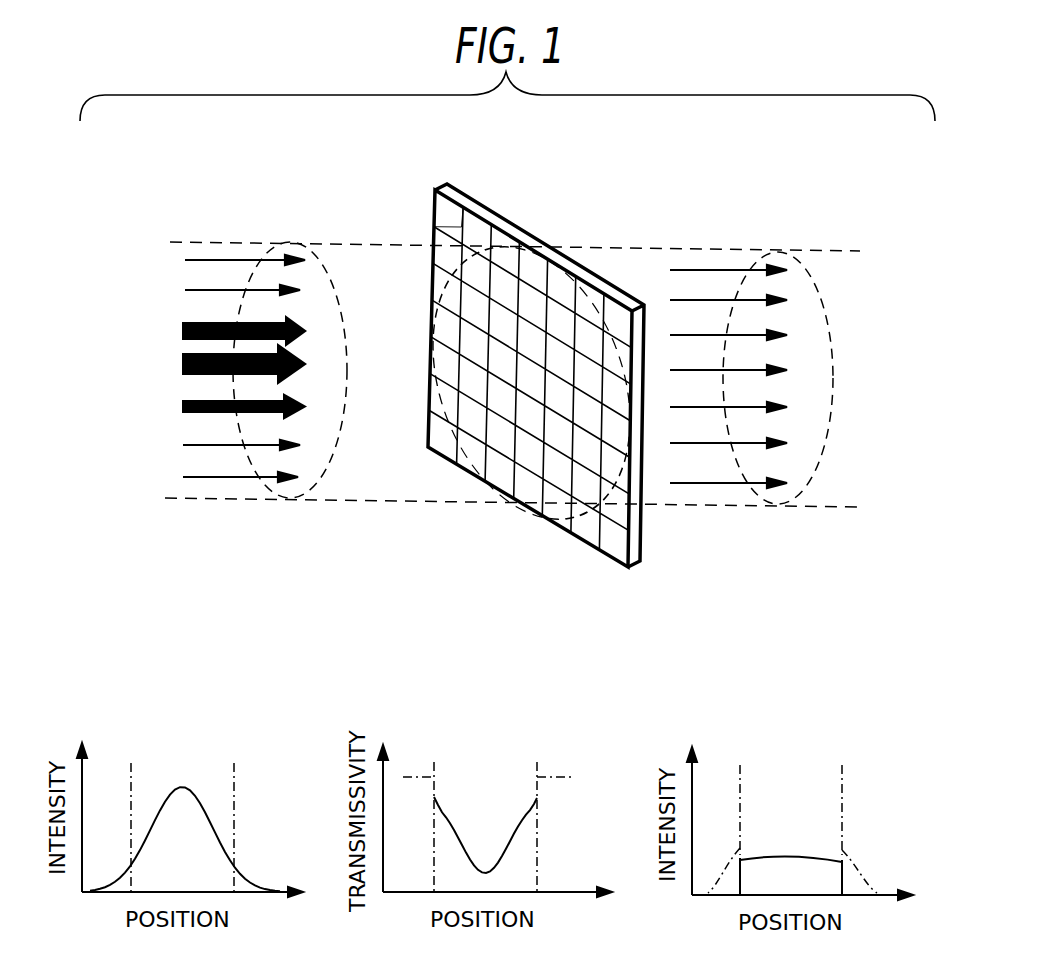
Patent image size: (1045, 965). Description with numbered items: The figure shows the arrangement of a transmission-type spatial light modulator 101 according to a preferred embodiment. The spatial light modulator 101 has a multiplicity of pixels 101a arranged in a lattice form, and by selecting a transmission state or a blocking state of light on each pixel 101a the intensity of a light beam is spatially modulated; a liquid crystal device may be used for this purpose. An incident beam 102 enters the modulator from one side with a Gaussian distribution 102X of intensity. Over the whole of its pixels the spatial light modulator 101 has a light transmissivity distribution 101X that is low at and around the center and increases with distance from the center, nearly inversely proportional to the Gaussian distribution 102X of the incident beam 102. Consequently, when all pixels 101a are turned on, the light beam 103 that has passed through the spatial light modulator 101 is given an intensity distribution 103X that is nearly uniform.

The spatial light modulator 101 is at (548, 247).
The pixel 101a is at (447, 213).
The incident beam 102 is at (314, 490).
The light beam after passing the spatial light modulator 103 is at (806, 492).
The Gaussian distribution 102X is at (182, 787).
The light transmissivity distribution 101X is at (447, 818).
The intensity distribution 103X is at (785, 855).